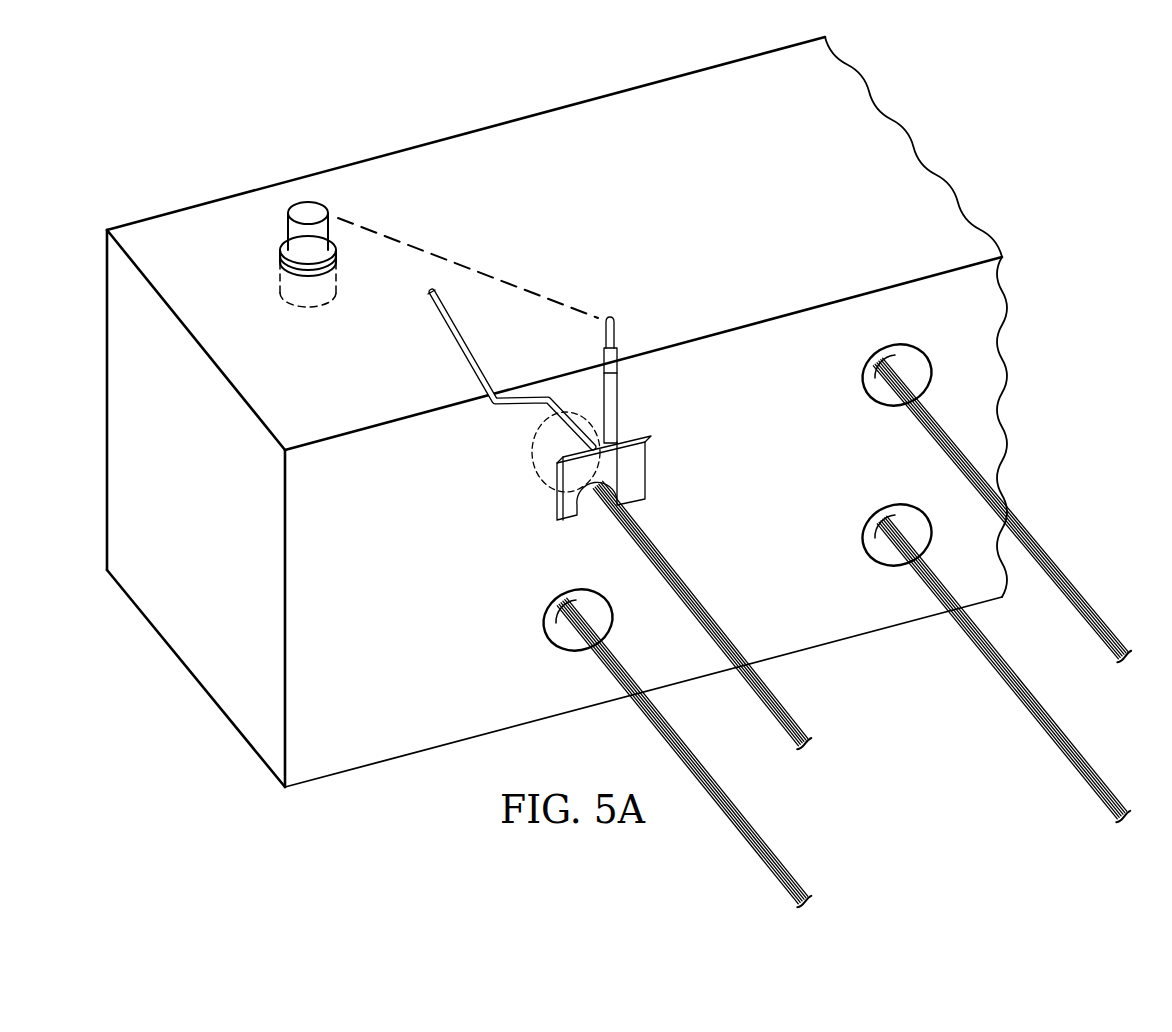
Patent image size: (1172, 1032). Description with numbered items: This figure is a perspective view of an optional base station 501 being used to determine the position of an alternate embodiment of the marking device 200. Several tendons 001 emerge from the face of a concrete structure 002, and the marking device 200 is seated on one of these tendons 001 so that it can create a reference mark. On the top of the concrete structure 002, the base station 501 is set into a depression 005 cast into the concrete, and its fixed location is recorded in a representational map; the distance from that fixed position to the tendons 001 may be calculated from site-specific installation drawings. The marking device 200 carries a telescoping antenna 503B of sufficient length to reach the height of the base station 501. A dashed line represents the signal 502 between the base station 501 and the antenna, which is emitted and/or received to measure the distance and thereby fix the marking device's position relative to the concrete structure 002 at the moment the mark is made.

The concrete structure 002 is at (577, 103).
The tendons 001 is at (704, 608).
The base station 501 is at (308, 202).
The depression 005 is at (302, 306).
The signal between base station and antenna of the measuring device 502 is at (455, 263).
The telescoping antenna 503B is at (617, 397).
The marking device 200 is at (518, 513).